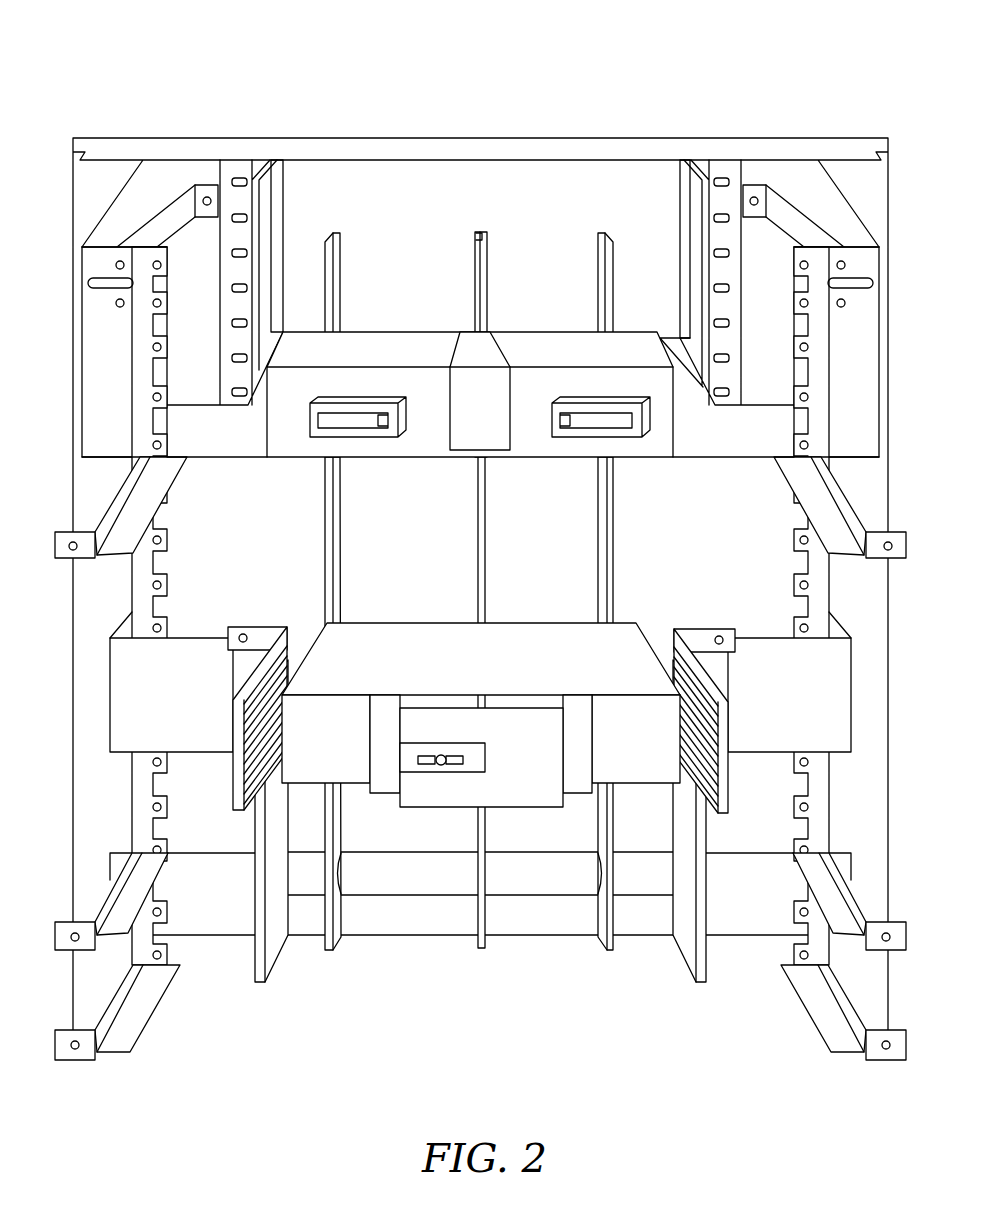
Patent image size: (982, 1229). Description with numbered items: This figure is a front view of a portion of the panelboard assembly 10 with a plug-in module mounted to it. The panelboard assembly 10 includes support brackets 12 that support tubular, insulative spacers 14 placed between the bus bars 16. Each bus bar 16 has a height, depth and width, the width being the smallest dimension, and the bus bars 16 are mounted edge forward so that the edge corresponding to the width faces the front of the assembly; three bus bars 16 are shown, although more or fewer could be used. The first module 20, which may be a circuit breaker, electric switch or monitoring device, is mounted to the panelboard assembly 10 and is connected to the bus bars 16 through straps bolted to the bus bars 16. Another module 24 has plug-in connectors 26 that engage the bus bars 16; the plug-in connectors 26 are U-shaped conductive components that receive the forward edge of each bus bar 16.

The panelboard assembly 10 is at (262, 112).
The support bracket 12 is at (277, 178).
The tubular insulative spacer 14 is at (301, 890).
The bus bar 16 is at (335, 232).
The first module 20 is at (504, 637).
The module 24 is at (539, 332).
The plug-in connector 26 is at (475, 330).